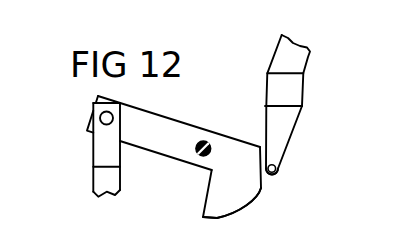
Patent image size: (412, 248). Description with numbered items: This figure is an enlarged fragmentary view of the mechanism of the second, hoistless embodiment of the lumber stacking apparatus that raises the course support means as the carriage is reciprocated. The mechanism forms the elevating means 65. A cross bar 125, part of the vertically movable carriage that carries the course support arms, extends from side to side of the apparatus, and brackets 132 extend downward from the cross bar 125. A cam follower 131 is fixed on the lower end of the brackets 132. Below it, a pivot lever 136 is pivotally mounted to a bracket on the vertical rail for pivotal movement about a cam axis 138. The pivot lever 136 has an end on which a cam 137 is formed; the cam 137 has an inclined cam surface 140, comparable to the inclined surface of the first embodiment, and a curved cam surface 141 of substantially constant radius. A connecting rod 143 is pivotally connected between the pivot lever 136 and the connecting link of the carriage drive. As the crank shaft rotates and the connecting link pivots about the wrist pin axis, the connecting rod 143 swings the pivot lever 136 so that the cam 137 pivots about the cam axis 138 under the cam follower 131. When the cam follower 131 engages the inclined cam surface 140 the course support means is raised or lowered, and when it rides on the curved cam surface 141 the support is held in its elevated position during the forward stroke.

The elevating means 65 is at (205, 168).
The cross bar 125 is at (293, 92).
The cam follower 131 is at (278, 165).
The brackets 132 is at (289, 128).
The pivot lever 136 is at (134, 110).
The cam 137 is at (243, 203).
The cam axis 138 is at (198, 141).
The inclined cam surface 140 is at (266, 178).
The curved cam surface 141 is at (215, 219).
The connecting rod 143 is at (103, 177).